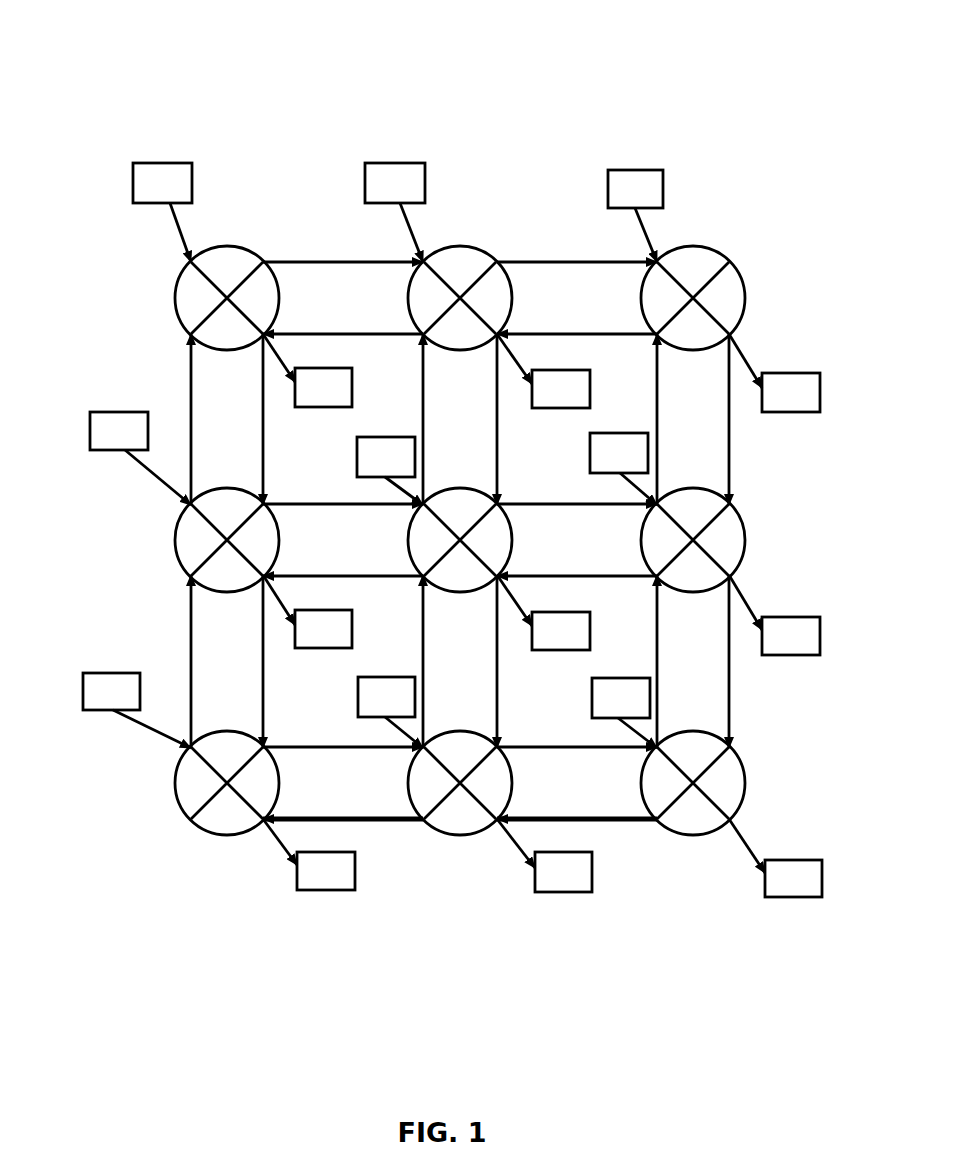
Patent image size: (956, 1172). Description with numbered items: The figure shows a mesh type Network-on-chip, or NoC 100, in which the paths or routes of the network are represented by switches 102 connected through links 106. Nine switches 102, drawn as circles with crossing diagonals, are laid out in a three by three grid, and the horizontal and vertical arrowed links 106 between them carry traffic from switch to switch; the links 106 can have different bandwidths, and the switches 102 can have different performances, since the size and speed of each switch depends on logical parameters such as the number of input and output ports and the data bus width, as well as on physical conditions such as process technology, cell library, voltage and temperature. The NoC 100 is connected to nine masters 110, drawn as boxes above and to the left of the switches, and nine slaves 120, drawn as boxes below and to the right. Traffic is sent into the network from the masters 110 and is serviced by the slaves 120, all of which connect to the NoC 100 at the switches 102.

The NoC 100 is at (693, 100).
The switches 102 is at (177, 298).
The links 106 is at (190, 392).
The masters 110 is at (632, 170).
The slaves 120 is at (327, 890).